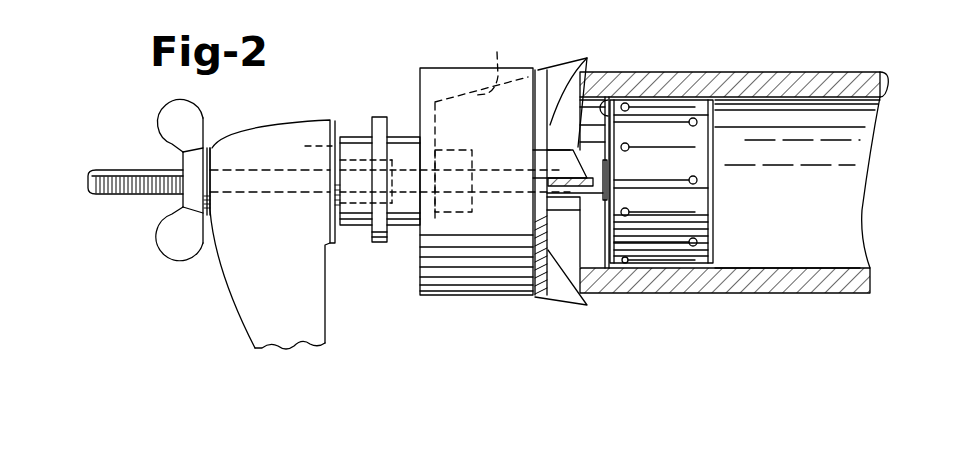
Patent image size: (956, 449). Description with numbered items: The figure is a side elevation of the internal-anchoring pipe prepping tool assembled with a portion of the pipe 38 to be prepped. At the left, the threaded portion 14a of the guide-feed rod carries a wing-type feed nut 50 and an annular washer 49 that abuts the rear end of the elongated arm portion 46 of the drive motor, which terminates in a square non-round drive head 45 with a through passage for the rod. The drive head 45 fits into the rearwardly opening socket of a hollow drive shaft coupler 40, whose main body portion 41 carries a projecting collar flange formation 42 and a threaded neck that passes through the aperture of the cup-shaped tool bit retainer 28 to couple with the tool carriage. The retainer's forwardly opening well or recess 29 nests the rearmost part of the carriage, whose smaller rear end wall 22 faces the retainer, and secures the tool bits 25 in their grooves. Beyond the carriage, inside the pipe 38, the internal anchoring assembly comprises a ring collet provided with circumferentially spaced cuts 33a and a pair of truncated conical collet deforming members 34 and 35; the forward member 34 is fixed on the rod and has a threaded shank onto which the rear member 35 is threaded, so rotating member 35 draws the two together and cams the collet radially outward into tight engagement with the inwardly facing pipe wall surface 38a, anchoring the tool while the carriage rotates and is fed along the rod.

The threaded portion of the guide-feed rod 14a is at (118, 170).
The rear end wall 22 is at (556, 102).
The tool bits 25 is at (555, 70).
The tool bit retainer 28 is at (467, 293).
The well or recess 29 is at (494, 62).
The cuts 33a is at (677, 120).
The collet deforming member 34 is at (713, 211).
The collet deforming member 35 is at (616, 98).
The pipe 38 is at (745, 287).
The pipe wall inner surface 38a is at (785, 268).
The drive shaft coupler 40 is at (379, 104).
The main body portion 41 is at (353, 228).
The collar flange formation 42 is at (380, 245).
The non-round drive head 45 is at (304, 146).
The arm portion of drive motor 46 is at (302, 121).
The annular washer 49 is at (208, 214).
The feed nut 50 is at (203, 120).